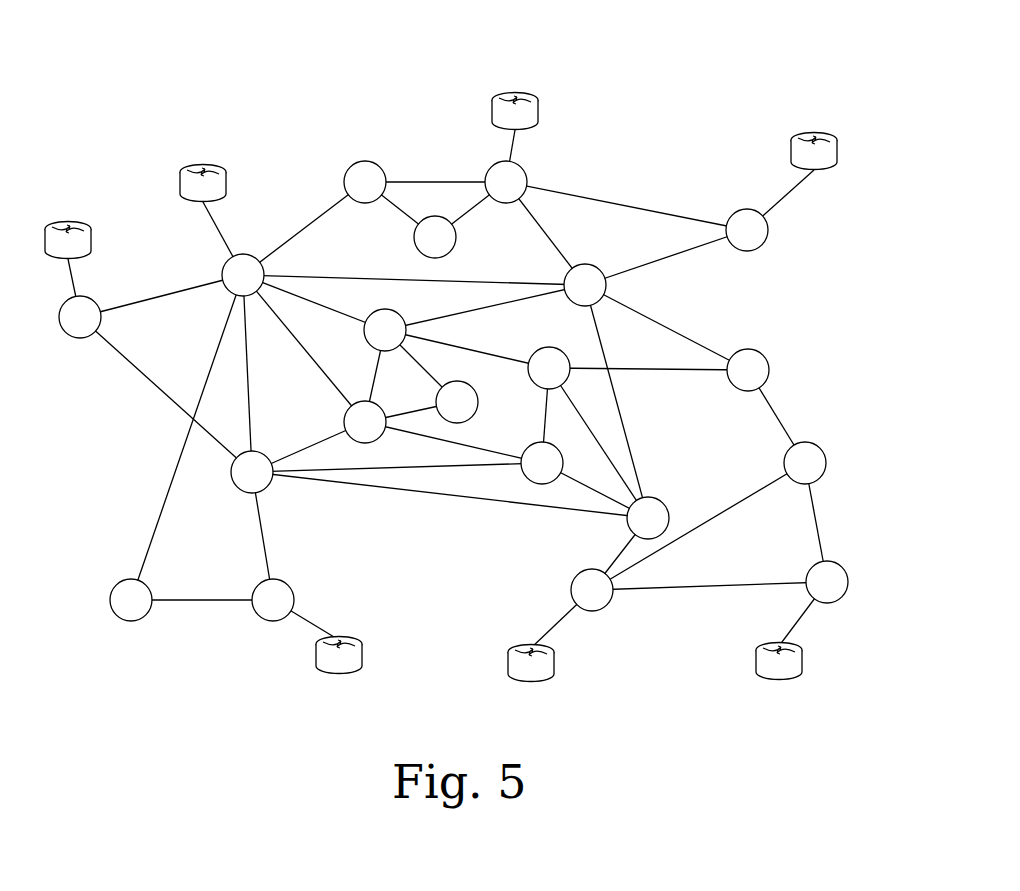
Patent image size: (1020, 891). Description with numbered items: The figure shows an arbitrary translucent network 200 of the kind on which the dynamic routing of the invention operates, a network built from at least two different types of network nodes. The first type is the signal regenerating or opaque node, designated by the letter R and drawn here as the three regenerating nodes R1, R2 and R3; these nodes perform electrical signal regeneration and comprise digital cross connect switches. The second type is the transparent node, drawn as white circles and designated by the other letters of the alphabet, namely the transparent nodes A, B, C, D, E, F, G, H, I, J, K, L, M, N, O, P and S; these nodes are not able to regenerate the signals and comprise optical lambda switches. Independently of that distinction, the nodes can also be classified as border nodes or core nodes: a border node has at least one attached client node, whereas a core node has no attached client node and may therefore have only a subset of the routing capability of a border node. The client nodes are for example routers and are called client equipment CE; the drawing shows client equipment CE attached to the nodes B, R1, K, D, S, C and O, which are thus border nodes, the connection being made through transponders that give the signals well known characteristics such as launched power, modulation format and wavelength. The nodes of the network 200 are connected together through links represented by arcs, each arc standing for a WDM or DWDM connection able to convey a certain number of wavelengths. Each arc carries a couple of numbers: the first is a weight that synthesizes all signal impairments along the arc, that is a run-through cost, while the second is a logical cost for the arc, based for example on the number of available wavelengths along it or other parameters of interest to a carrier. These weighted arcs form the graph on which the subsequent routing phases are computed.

The translucent network 200 is at (460, 364).
The client equipment CE is at (446, 364).
The signal regenerating node R1 is at (243, 275).
The signal regenerating node R2 is at (542, 463).
The signal regenerating node R3 is at (805, 463).
The transparent node A is at (131, 600).
The transparent node B is at (80, 317).
The transparent node C is at (592, 590).
The transparent node D is at (747, 230).
The transparent node E is at (252, 472).
The transparent node F is at (365, 422).
The transparent node G is at (385, 330).
The transparent node H is at (457, 402).
The transparent node I is at (365, 182).
The transparent node J is at (435, 237).
The transparent node K is at (506, 182).
The transparent node L is at (585, 285).
The transparent node M is at (648, 518).
The transparent node N is at (549, 368).
The transparent node O is at (827, 582).
The transparent node P is at (748, 370).
The transparent node S is at (273, 600).